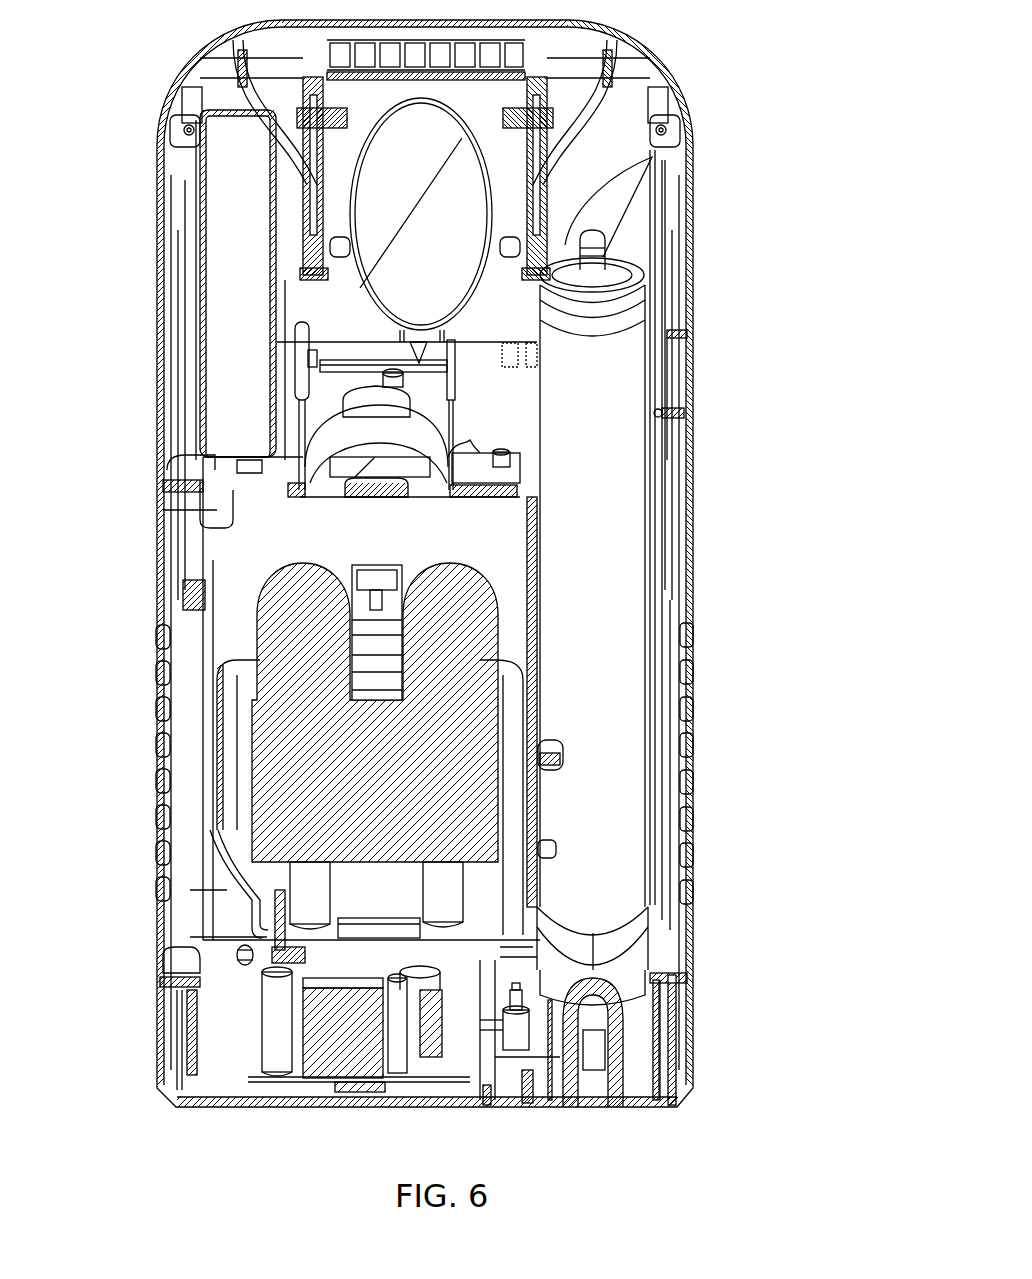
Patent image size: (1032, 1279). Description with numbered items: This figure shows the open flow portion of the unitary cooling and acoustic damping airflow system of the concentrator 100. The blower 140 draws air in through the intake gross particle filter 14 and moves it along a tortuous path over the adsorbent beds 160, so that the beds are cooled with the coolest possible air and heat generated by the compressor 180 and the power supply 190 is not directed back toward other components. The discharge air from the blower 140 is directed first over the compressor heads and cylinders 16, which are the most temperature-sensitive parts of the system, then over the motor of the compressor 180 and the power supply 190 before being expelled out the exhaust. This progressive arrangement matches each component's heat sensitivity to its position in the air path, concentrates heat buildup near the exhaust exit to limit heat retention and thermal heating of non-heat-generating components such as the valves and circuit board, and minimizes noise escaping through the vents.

The concentrator 100 is at (172, 518).
The blower 140 is at (405, 432).
The adsorbent beds 160 is at (622, 482).
The compressor heads and cylinders 16 is at (465, 633).
The compressor 180 is at (290, 735).
The power supply 190 is at (460, 1045).
The intake gross particle filter 14 is at (693, 830).